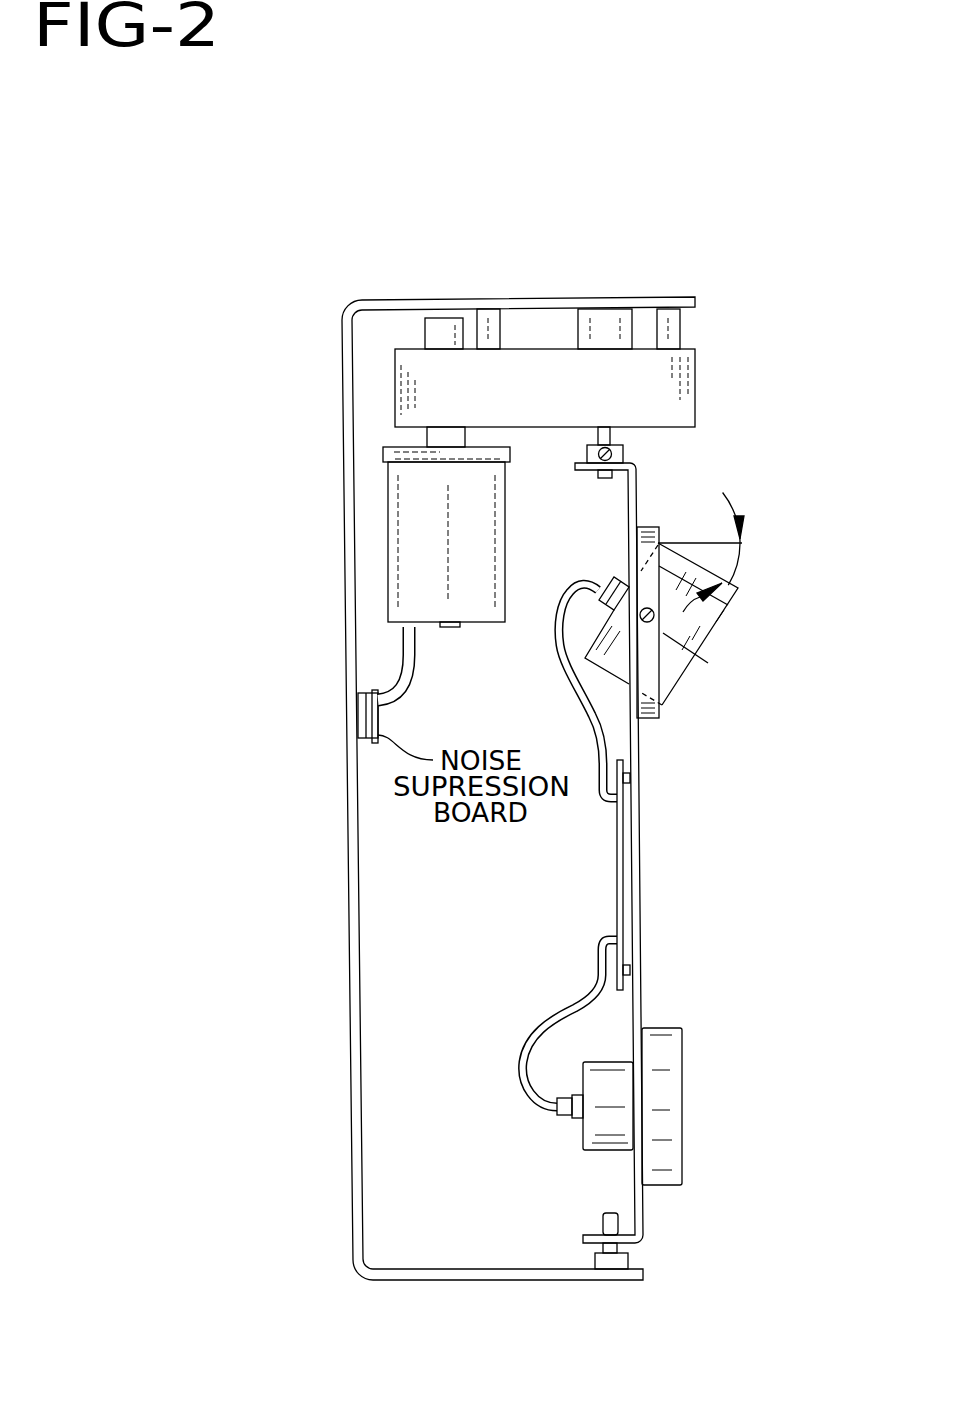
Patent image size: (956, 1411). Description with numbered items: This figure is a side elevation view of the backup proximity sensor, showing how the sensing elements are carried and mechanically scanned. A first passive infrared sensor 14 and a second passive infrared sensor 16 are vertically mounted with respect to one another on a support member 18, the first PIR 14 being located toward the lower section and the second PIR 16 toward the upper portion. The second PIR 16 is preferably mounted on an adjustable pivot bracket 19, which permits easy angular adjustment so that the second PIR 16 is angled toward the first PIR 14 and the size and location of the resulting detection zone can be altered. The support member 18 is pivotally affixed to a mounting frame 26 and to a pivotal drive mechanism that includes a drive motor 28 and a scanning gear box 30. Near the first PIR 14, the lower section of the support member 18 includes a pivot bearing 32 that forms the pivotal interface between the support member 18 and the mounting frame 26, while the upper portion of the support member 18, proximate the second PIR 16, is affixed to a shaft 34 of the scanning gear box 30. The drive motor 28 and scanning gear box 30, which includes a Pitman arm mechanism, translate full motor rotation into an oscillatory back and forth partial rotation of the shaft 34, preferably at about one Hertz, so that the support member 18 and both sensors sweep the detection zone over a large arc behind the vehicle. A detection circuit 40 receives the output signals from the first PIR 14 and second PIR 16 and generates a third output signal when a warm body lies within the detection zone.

The first passive infrared sensor 14 is at (682, 1143).
The second passive infrared sensor 16 is at (720, 630).
The support member 18 is at (636, 497).
The adjustable pivot bracket 19 is at (647, 623).
The mounting frame 26 is at (568, 1282).
The drive motor 28 is at (505, 525).
The scanning gear box 30 is at (695, 383).
The pivot bearing 32 is at (600, 1225).
The shaft 34 is at (612, 437).
The detection circuit 40 is at (617, 822).